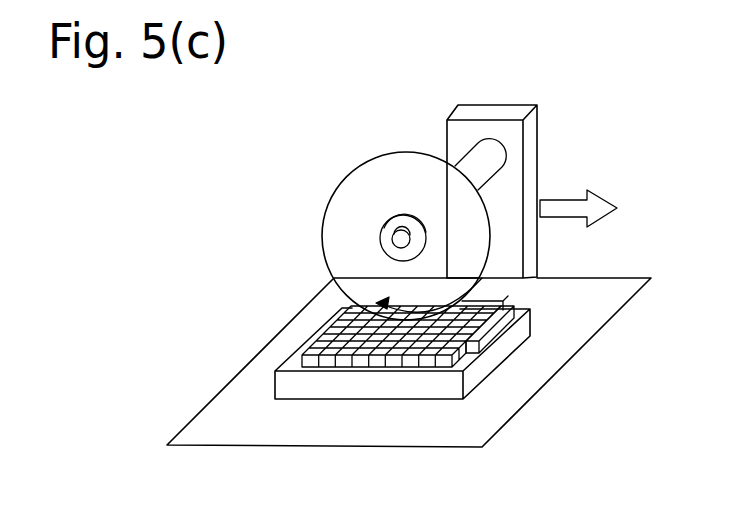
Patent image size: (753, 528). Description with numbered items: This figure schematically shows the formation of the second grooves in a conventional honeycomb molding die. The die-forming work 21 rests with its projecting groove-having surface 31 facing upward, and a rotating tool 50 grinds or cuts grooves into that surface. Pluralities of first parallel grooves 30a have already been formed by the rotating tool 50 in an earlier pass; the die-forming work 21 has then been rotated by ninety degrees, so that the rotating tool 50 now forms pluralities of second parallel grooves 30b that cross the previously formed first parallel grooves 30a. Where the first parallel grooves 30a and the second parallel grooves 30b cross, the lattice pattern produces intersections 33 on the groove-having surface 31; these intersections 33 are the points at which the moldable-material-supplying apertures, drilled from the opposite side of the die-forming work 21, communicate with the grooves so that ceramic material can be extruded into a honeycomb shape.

The die-forming work 21 is at (503, 348).
The groove-having surface 31 is at (505, 308).
The intersections 33 is at (333, 321).
The first parallel grooves 30a is at (483, 303).
The second parallel grooves 30b is at (480, 337).
The rotating tool 50 is at (343, 190).